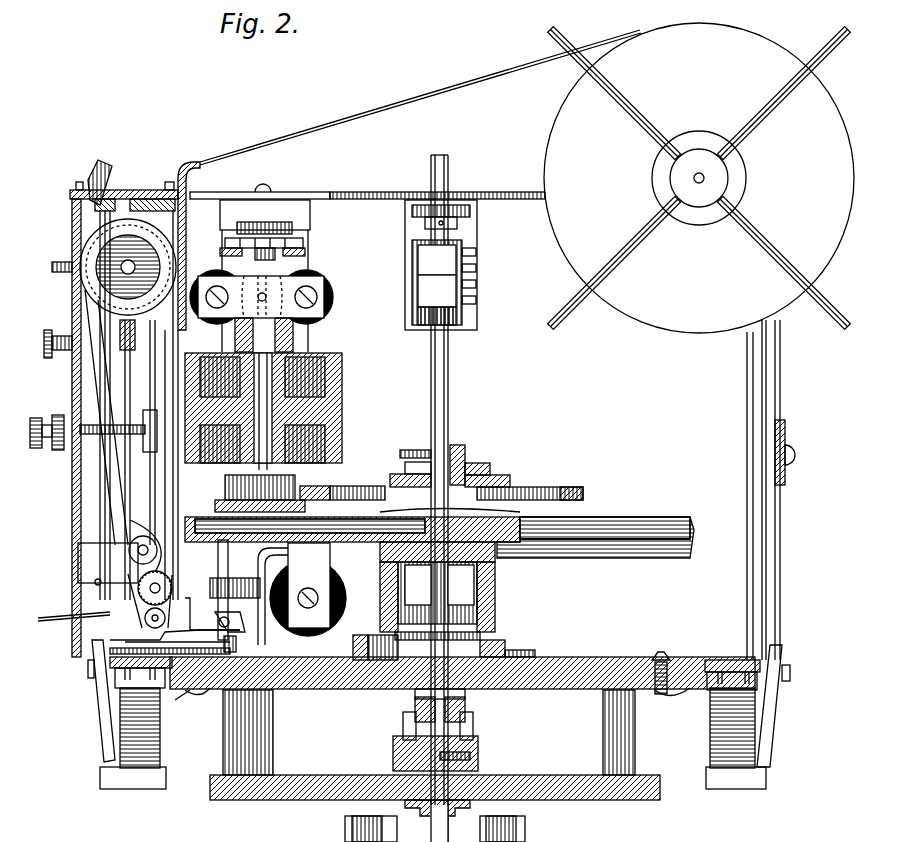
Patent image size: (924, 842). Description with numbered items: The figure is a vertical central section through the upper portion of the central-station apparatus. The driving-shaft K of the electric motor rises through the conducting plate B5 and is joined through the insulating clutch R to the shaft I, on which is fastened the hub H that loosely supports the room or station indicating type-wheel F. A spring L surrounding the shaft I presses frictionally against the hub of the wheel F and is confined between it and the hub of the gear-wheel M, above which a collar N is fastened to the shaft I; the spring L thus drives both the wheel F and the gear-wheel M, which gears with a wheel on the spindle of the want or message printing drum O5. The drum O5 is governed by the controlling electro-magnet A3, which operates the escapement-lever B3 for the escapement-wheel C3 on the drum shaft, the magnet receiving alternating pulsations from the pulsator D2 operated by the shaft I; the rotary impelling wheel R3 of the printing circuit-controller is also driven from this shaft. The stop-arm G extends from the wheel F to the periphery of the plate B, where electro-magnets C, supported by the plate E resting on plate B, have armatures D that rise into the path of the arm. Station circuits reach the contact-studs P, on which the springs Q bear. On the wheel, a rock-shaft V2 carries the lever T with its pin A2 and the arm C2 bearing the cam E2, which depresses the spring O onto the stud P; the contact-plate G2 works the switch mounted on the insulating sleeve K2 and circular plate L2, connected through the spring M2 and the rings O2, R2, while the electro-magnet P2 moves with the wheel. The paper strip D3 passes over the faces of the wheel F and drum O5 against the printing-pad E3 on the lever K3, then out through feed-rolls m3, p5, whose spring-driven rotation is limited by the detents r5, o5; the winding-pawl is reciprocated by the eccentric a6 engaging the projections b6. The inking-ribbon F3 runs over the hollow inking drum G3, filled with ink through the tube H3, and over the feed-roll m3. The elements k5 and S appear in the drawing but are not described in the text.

The strip or ribbon of paper D3 is at (392, 95).
The tube H3 is at (108, 183).
The inking drum G3 is at (90, 237).
The inking-ribbon F3 is at (172, 344).
The printing-pad E3 is at (162, 384).
The lever K3 is at (146, 415).
The escapement-wheel C3 is at (290, 240).
The escapement-lever B3 is at (305, 252).
The controlling electro-magnet A3 is at (320, 278).
The want or message printing drum O5 is at (342, 400).
The shaft I is at (455, 400).
The rotary impelling disk or wheel R3 is at (472, 214).
The pulsator D2 is at (460, 282).
The collar N is at (468, 448).
The eccentric a6 is at (485, 465).
The projections b6 is at (495, 478).
The gear-wheel M is at (522, 488).
The spring L is at (490, 515).
The room or station indicating type-wheel F is at (660, 517).
The hub H is at (495, 578).
The sleeve K2 is at (496, 606).
The circular plate L2 is at (482, 635).
The stop-arm G is at (265, 630).
The electro-magnet P2 is at (292, 590).
The rock-shaft V2 is at (232, 568).
The arm C2 is at (228, 618).
The cam E2 is at (236, 622).
The spring O is at (236, 646).
The contact-plate G2 is at (353, 648).
The detent r5 is at (143, 534).
The detent o5 is at (160, 535).
The plate k5 is at (132, 560).
The paper-feed roll m3 is at (140, 588).
The feed-roll p5 is at (154, 604).
The pin A2 is at (112, 648).
The plate B is at (590, 660).
The lever T is at (140, 678).
The springs Q is at (670, 706).
The electro-magnets C is at (160, 735).
The armatures D is at (100, 703).
The contact-studs P is at (666, 664).
The screw head S is at (657, 648).
The plate E is at (730, 660).
The ring O2 is at (506, 648).
The ring of metal R2 is at (536, 655).
The spring M2 is at (385, 680).
The clutch R is at (475, 738).
The plate B5 is at (538, 776).
The driving-shaft K is at (442, 816).